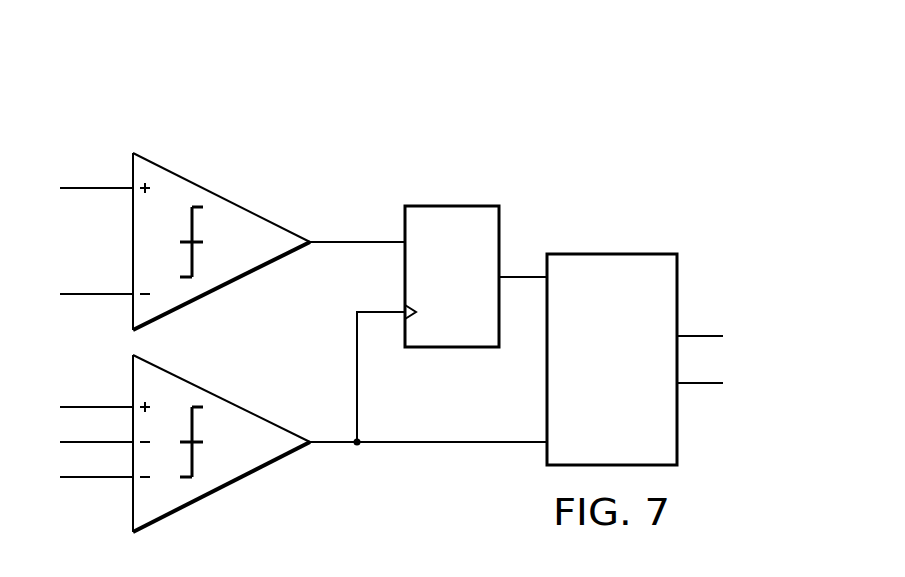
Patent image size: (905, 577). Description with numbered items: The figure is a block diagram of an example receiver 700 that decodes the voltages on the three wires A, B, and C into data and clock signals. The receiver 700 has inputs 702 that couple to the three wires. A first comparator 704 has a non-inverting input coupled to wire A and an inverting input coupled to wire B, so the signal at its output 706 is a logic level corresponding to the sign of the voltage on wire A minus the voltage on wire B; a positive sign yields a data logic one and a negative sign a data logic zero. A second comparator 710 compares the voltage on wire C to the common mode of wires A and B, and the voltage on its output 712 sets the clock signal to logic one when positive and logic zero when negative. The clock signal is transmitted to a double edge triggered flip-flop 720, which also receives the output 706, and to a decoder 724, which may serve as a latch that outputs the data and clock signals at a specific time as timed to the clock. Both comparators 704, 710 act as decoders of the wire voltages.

The receiver 700 is at (553, 78).
The inputs 702 is at (97, 143).
The first comparator 704 is at (222, 196).
The output 706 is at (355, 240).
The second comparator 710 is at (222, 490).
The output 712 is at (333, 444).
The double edge triggered flip-flop (DETFF) 720 is at (458, 206).
The decoder 724 is at (633, 394).